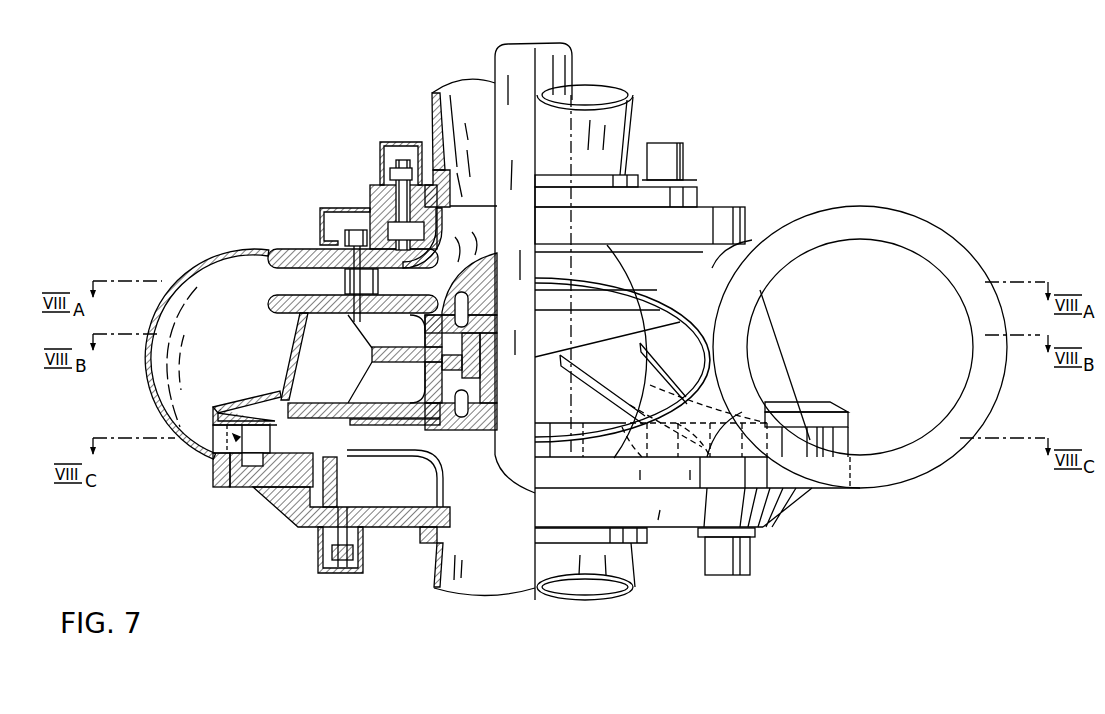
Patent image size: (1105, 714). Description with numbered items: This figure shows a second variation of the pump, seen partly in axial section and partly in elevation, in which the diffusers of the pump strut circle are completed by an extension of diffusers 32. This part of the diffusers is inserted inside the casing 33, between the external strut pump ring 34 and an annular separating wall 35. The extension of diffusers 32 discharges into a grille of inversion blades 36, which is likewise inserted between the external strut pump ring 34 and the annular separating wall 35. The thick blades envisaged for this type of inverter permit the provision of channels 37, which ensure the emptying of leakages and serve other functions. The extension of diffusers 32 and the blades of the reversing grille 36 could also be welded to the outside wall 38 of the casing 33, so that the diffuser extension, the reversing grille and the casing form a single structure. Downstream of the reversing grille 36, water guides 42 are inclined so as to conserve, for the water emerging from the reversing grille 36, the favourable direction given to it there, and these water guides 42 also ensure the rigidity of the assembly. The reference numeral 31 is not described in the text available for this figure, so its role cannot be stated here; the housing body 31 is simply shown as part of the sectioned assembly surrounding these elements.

The housing 31 is at (302, 440).
The extension of diffusers 32 is at (258, 442).
The casing 33 is at (177, 274).
The external strut pump ring 34 is at (220, 462).
The annular separating wall 35 is at (240, 405).
The grille of inversion blades 36 is at (235, 440).
The channels 37 is at (255, 422).
The outside wall 38 is at (226, 262).
The water guides 42 is at (597, 395).